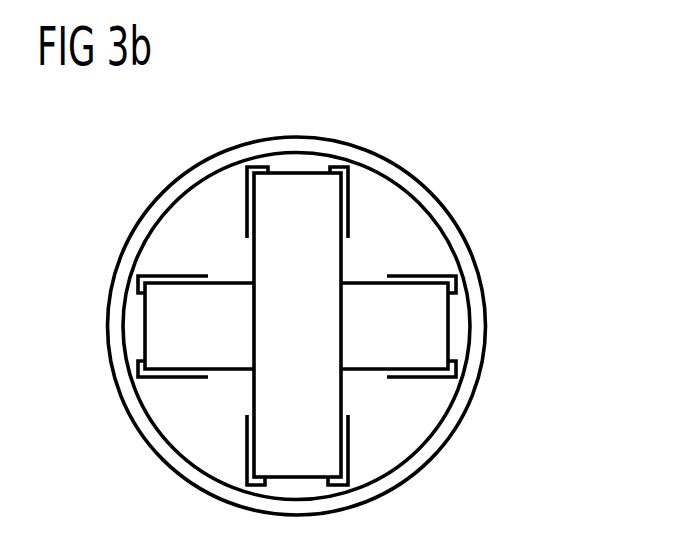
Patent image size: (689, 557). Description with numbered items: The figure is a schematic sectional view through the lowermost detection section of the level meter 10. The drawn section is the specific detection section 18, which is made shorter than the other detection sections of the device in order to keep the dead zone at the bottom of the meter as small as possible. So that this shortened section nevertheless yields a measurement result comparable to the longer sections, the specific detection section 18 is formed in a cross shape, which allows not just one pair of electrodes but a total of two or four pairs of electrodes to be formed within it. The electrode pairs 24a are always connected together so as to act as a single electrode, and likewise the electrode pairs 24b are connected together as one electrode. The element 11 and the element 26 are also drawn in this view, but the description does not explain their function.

The level meter 10 is at (357, 113).
The inner sleeve 11 is at (108, 327).
The specific detection section 18 is at (503, 293).
The electrode pairs 24a is at (347, 201).
The electrode pairs 24b is at (247, 202).
The cross-shaped carrier arms 26 is at (359, 296).